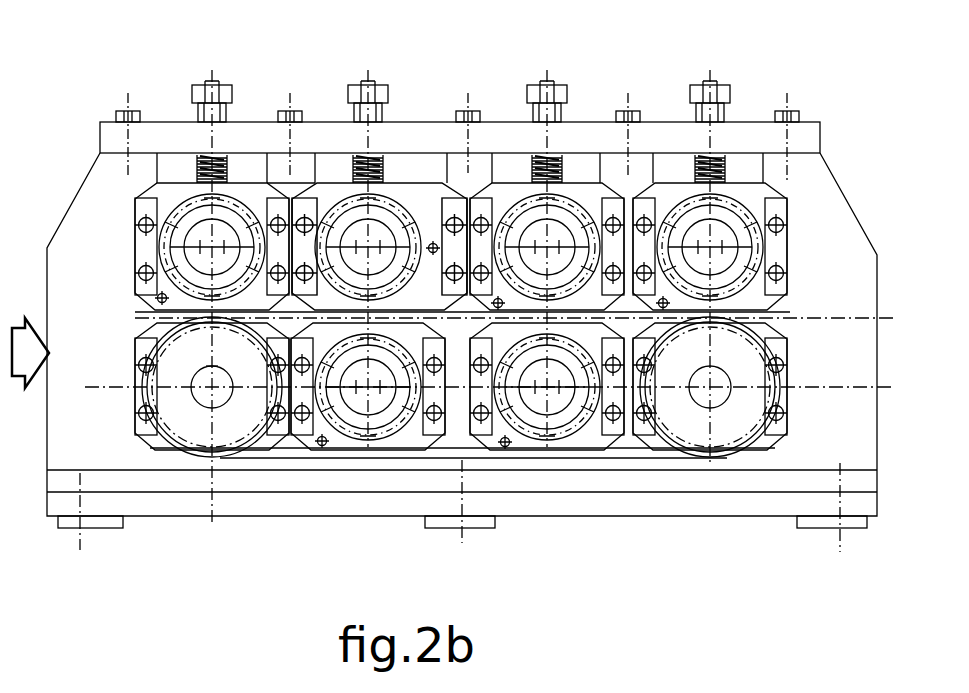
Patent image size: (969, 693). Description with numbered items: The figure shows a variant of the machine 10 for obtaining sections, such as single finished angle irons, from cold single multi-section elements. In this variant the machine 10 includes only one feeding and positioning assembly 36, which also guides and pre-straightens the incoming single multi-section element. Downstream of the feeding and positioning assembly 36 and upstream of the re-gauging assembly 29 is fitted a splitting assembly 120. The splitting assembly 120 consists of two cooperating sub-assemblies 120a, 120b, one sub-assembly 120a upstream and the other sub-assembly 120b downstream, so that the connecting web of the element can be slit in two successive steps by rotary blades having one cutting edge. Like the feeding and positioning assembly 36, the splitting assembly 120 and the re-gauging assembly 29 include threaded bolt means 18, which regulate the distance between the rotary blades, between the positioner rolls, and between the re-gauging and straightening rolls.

The machine 10 is at (70, 153).
The threaded bolt means 18 is at (203, 113).
The re-gauging assembly 29 is at (730, 142).
The feeding and positioning assembly 36 is at (237, 110).
The splitting assembly 120 is at (483, 98).
The upstream sub-assembly 120a is at (390, 113).
The downstream sub-assembly 120b is at (575, 112).